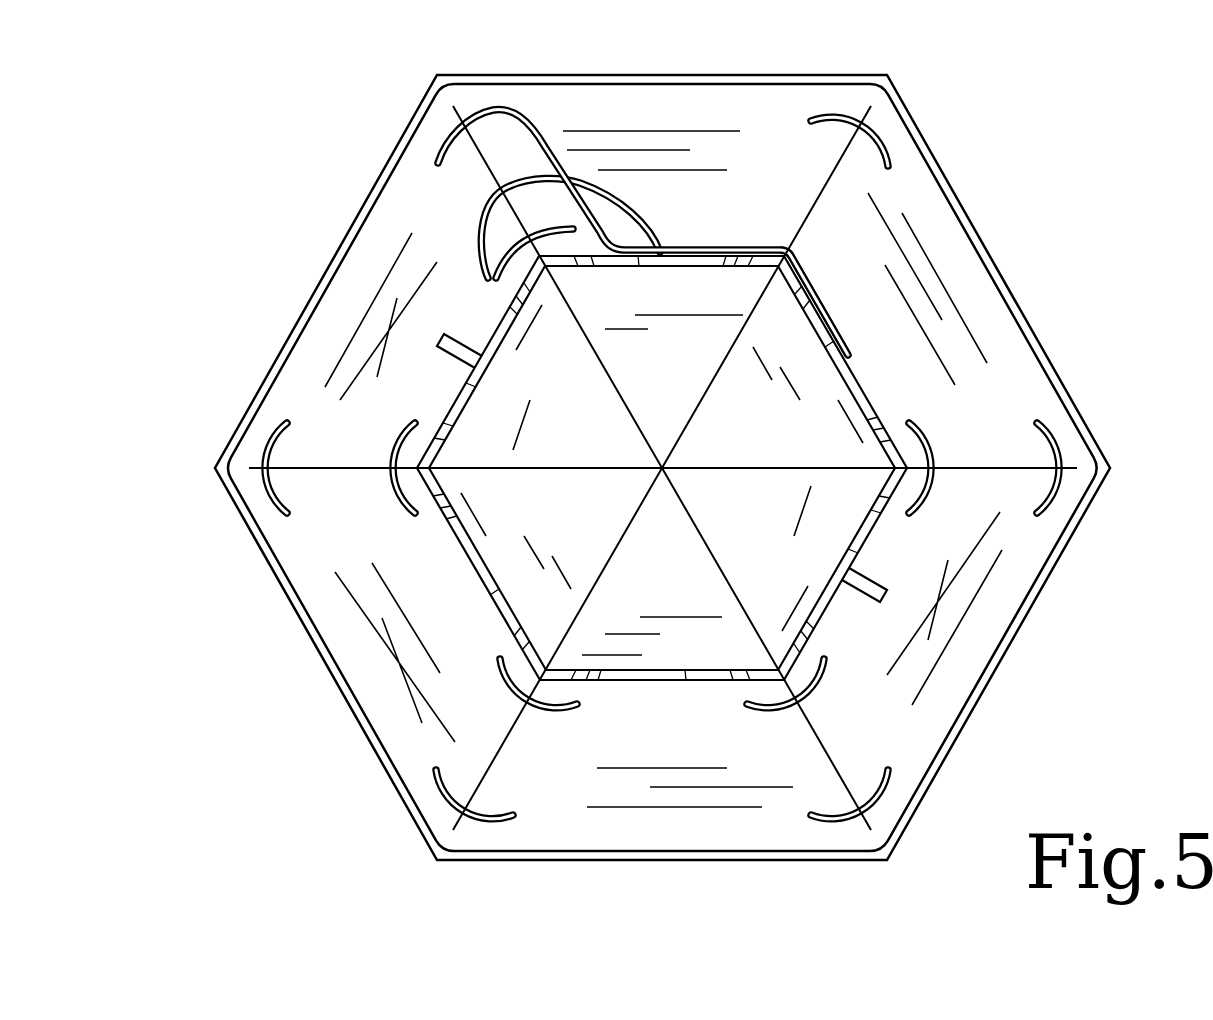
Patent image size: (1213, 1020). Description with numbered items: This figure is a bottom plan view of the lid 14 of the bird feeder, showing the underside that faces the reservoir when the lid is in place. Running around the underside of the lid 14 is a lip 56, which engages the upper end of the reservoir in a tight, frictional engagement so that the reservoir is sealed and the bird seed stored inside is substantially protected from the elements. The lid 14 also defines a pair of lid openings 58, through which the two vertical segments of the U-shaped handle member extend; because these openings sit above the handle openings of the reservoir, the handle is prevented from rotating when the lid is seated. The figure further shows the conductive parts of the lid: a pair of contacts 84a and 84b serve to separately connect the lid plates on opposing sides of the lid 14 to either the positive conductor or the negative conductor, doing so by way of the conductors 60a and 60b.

The lid 14 is at (957, 197).
The lip 56 is at (706, 679).
The lid openings 58 is at (440, 346).
The conductor 60a is at (540, 126).
The conductor 60b is at (598, 178).
The contact 84a is at (850, 362).
The contact 84b is at (659, 256).